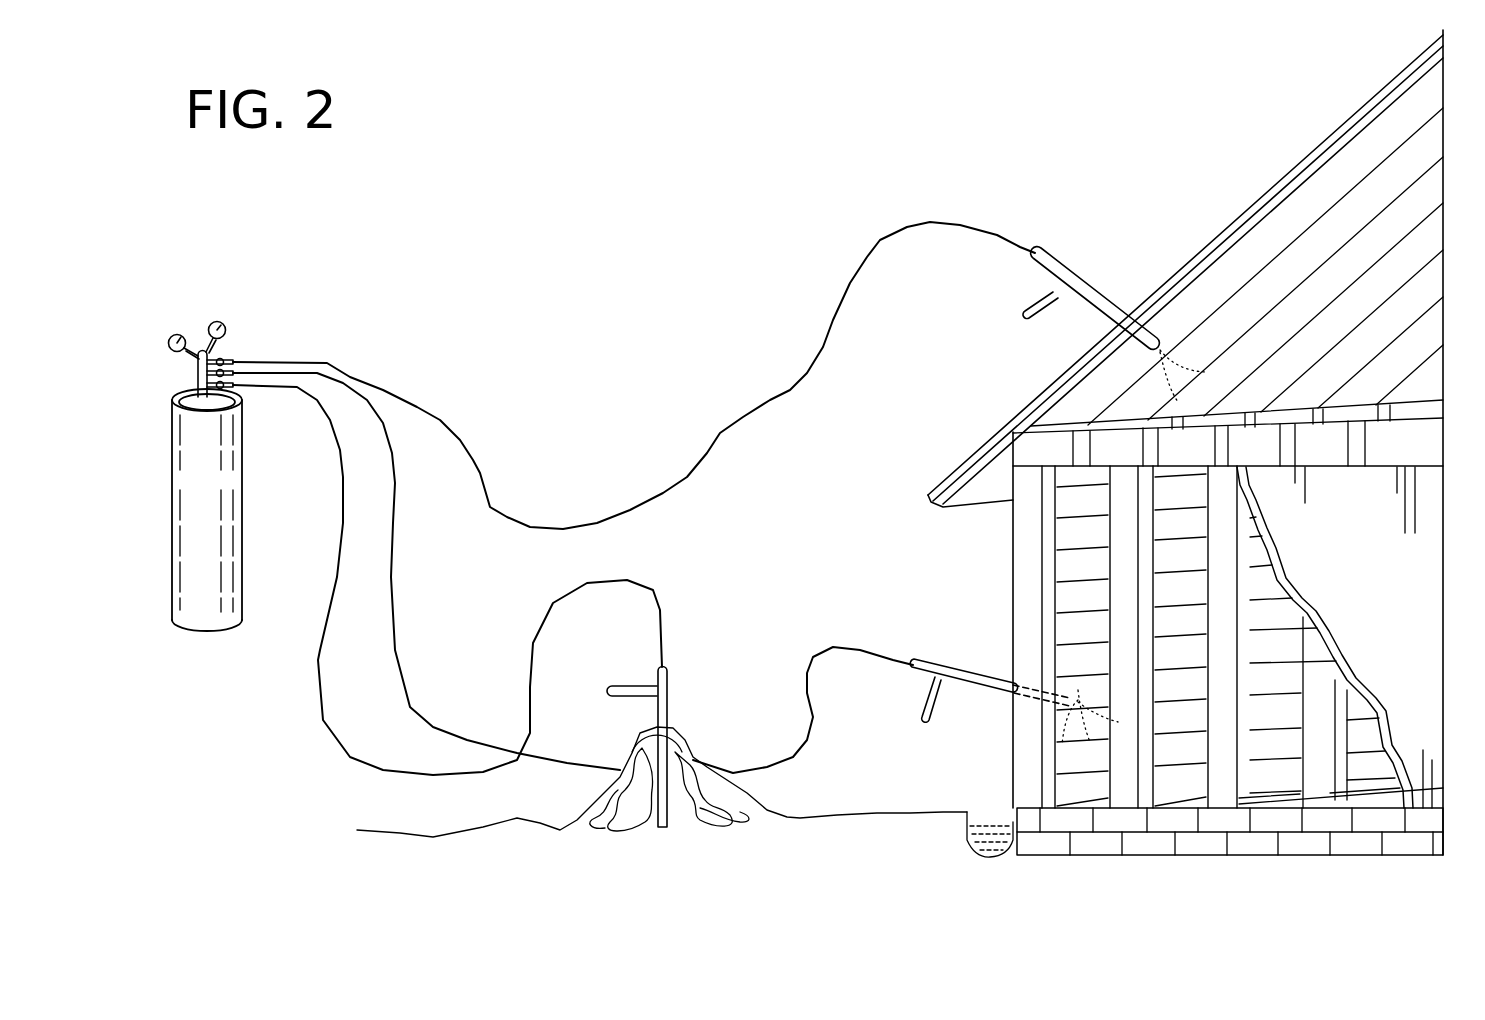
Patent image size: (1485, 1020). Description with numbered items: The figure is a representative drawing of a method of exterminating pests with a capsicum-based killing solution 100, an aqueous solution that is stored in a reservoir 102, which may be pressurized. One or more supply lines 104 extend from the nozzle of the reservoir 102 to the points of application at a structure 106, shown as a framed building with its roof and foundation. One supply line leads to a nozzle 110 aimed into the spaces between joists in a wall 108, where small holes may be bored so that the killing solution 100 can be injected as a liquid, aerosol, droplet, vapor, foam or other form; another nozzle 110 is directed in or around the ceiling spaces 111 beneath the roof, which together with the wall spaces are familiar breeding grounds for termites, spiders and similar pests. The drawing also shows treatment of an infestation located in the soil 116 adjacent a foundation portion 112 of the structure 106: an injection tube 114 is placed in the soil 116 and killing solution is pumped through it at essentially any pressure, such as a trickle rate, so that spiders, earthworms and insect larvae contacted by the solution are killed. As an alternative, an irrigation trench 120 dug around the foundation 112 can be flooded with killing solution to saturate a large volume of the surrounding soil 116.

The killing solution 100 is at (229, 567).
The reservoir 102 is at (243, 462).
The supply lines 104 is at (307, 412).
The structure 106 is at (1398, 605).
The wall 108 is at (1122, 637).
The nozzle 110 is at (1060, 264).
The ceiling spaces 111 is at (1226, 287).
The foundation portion 112 is at (1102, 848).
The injection tube 114 is at (668, 689).
The soil 116 is at (693, 867).
The irrigation trench 120 is at (968, 842).